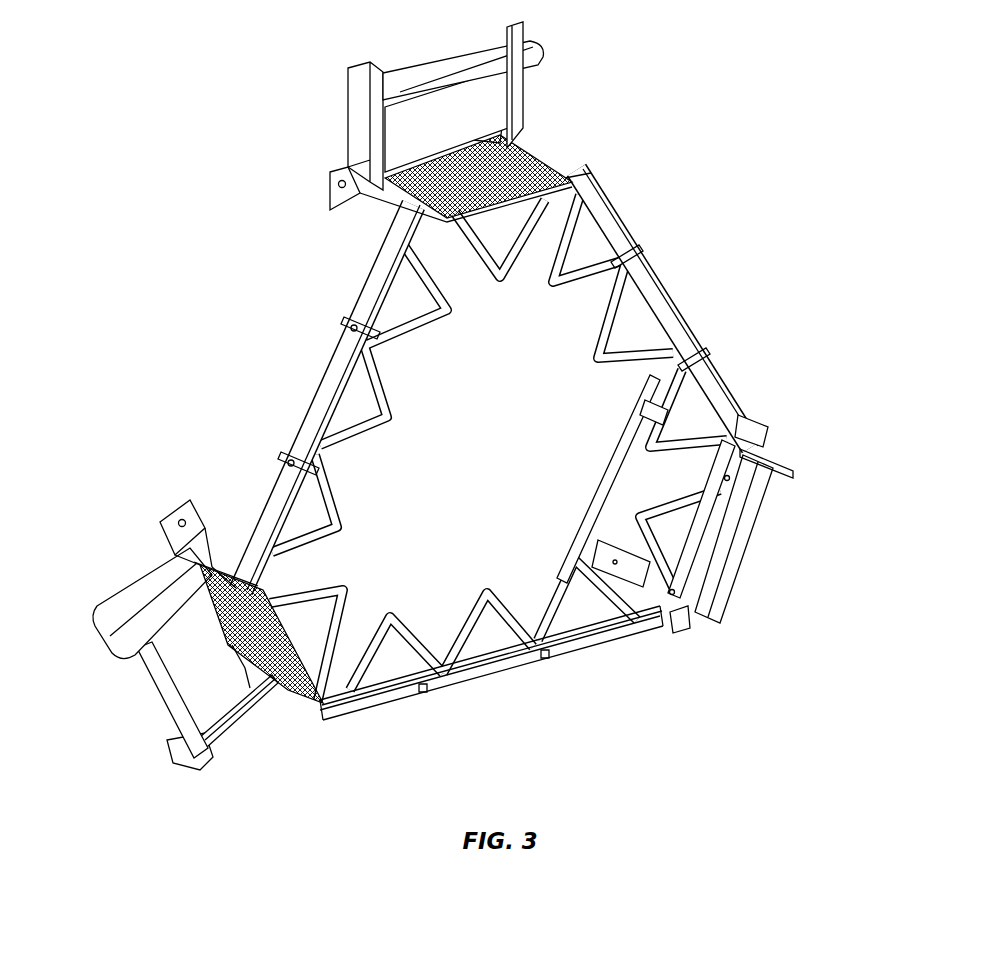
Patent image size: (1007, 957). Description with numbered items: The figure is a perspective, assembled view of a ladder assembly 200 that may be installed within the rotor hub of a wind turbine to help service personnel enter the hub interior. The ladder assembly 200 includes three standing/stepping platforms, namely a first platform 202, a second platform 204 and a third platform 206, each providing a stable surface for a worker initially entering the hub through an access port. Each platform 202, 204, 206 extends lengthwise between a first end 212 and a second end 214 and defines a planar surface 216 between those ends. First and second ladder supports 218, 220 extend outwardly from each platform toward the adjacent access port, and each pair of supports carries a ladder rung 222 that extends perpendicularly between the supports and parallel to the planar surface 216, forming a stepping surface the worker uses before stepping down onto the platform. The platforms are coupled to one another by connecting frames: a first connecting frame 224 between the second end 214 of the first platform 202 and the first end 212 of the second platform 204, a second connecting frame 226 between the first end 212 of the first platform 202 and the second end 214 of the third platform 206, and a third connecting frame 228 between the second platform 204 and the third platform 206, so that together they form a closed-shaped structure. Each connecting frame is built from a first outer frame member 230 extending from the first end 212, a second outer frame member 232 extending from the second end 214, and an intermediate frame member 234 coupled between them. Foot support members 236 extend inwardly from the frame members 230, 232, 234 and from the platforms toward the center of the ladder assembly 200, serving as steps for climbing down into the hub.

The ladder assembly 200 is at (445, 390).
The first platform 202 is at (502, 170).
The second platform 204 is at (215, 585).
The third platform 206 is at (740, 478).
The first end 212 is at (335, 204).
The second end 214 is at (566, 173).
The planar surface 216 is at (414, 167).
The first ladder support 218 is at (363, 136).
The second ladder support 220 is at (530, 92).
The ladder rung 222 is at (448, 78).
The first connecting frame 224 is at (642, 246).
The second connecting frame 226 is at (332, 343).
The third connecting frame 228 is at (470, 683).
The first outer frame member 230 is at (703, 380).
The second outer frame member 232 is at (603, 207).
The intermediate frame member 234 is at (661, 297).
The foot support member 236 is at (597, 352).